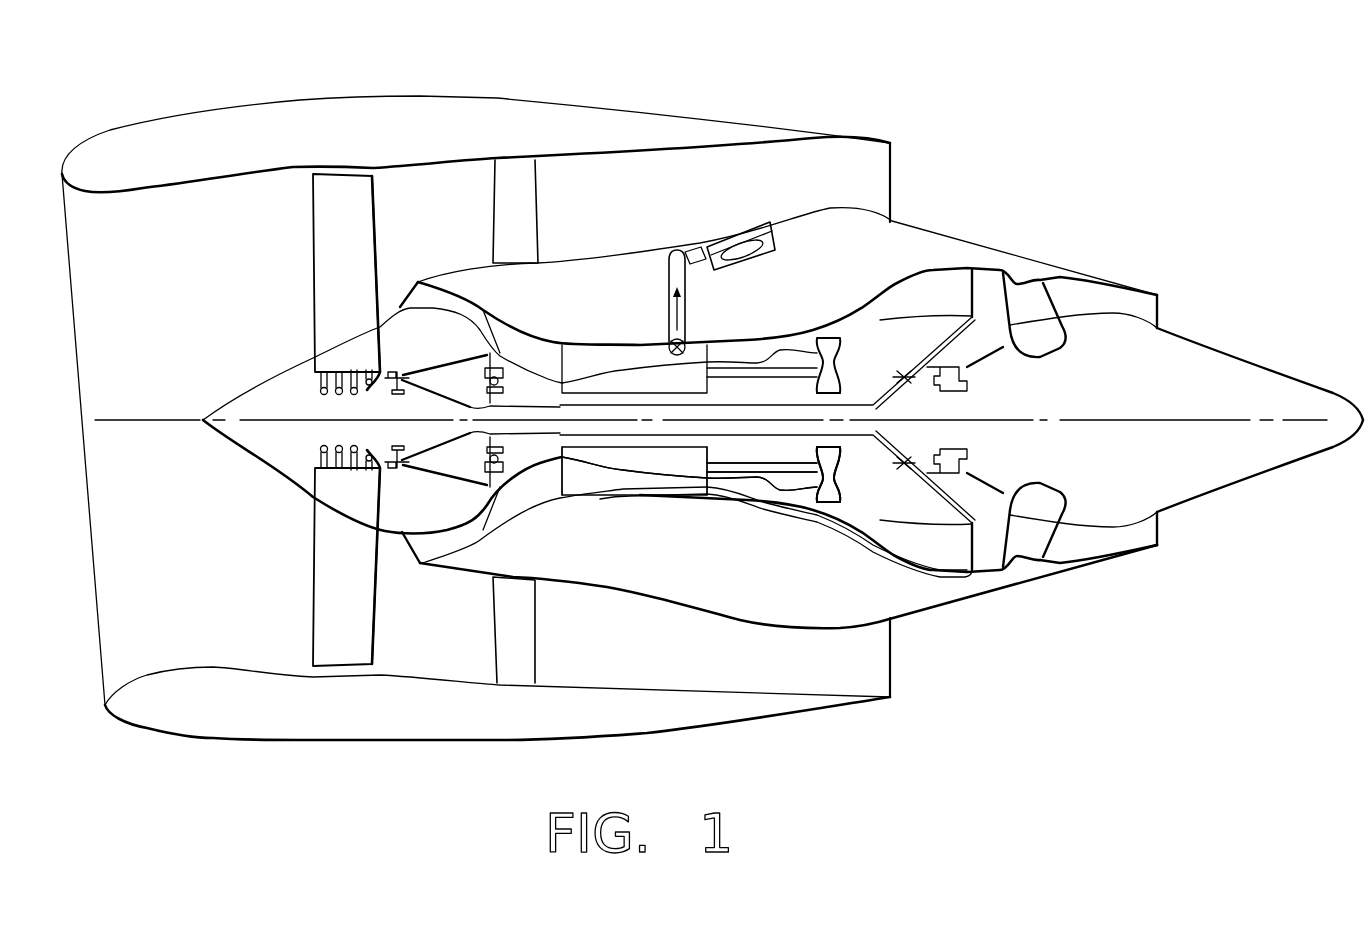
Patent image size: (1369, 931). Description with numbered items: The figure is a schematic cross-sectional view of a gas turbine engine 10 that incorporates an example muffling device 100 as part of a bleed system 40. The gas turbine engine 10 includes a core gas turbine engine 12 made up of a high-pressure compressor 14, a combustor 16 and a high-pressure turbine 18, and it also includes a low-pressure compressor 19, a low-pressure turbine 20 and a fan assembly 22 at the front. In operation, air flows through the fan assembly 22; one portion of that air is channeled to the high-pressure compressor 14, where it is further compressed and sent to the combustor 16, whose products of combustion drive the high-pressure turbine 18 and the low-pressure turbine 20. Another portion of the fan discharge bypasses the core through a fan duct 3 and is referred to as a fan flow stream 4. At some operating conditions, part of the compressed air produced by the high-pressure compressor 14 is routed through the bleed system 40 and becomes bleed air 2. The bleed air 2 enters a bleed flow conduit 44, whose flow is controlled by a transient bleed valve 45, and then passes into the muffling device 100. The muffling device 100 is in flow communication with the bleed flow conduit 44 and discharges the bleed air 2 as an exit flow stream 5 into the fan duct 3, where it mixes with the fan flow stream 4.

The bleed air 2 is at (686, 312).
The fan duct 3 is at (443, 192).
The fan flow stream 4 is at (626, 177).
The exit flow stream 5 is at (775, 198).
The gas turbine engine 10 is at (780, 65).
The core gas turbine engine 12 is at (1031, 263).
The high-pressure compressor 14 is at (627, 503).
The combustor 16 is at (766, 512).
The high-pressure turbine 18 is at (829, 516).
The low-pressure compressor 19 is at (488, 551).
The low-pressure turbine 20 is at (932, 578).
The fan assembly 22 is at (296, 574).
The bleed system 40 is at (665, 247).
The bleed flow conduit 44 is at (670, 313).
The transient bleed valve 45 is at (686, 338).
The muffling device 100 is at (784, 232).